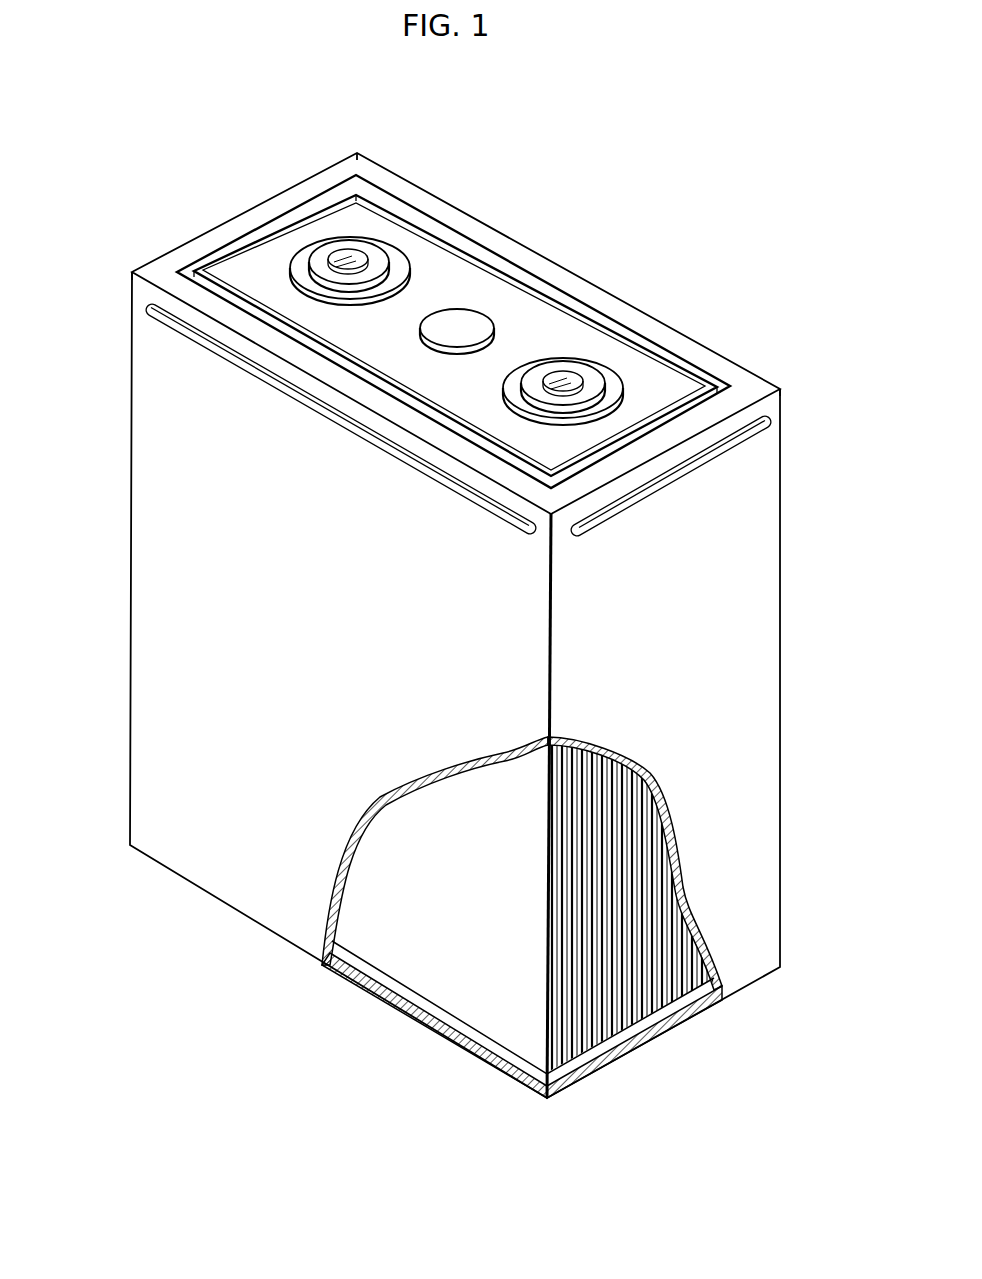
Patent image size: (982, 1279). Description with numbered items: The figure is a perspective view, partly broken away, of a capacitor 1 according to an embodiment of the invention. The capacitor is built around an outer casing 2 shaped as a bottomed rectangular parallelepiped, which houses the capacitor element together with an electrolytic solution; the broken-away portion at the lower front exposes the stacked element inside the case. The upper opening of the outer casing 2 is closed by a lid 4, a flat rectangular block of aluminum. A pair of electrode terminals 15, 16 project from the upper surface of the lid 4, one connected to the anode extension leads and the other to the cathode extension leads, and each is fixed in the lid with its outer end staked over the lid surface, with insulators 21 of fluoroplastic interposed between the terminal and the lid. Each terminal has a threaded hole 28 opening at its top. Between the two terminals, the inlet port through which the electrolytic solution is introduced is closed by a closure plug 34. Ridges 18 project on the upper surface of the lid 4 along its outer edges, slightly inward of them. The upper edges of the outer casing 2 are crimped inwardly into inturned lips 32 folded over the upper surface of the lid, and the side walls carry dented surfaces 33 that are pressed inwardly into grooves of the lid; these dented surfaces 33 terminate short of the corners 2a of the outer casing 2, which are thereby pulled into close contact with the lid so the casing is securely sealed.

The battery 1 is at (660, 180).
The outer casing 2 is at (718, 650).
The corners of the outer casing 2a is at (355, 146).
The lid 4 is at (520, 318).
The electrode terminal 15 is at (498, 240).
The electrode terminal 16 is at (592, 357).
The ridges 18 is at (676, 364).
The insulators 21 is at (400, 262).
The threaded hole 28 is at (333, 256).
The inturned lips 32 is at (745, 388).
The dented surfaces 33 is at (456, 490).
The closure plug 34 is at (457, 320).